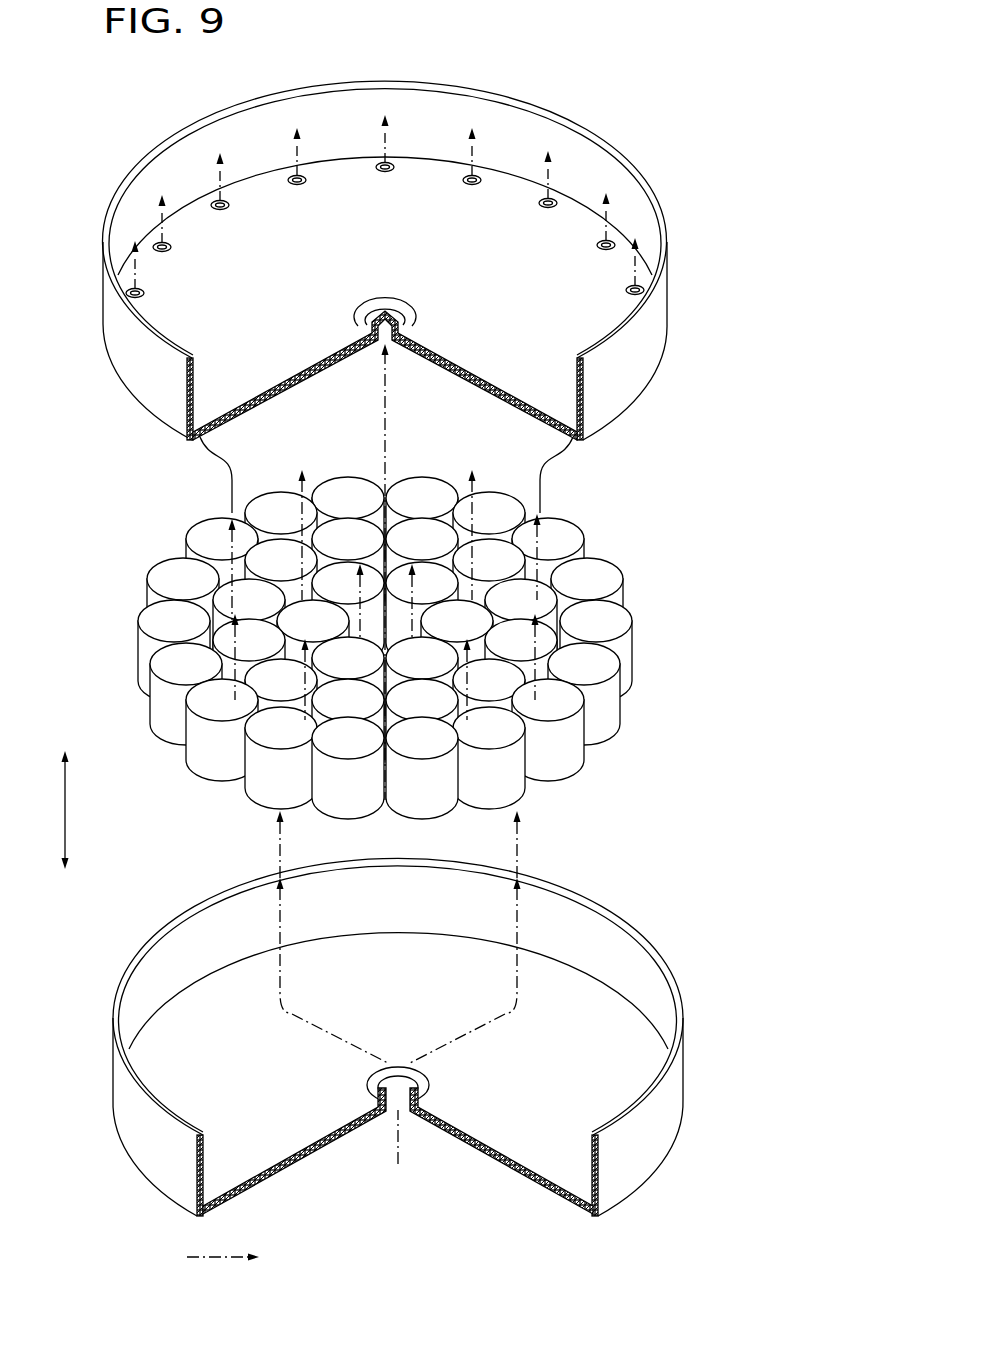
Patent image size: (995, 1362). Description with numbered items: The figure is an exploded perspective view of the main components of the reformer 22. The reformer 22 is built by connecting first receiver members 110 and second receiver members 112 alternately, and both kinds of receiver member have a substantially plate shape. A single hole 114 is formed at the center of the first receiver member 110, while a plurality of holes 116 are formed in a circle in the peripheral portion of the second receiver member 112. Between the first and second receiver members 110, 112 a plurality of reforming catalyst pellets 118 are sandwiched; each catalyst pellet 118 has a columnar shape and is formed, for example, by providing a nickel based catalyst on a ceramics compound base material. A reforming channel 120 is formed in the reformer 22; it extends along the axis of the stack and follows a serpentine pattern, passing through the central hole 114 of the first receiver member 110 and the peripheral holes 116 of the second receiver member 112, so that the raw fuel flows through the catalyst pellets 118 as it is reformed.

The reformer 22 is at (748, 317).
The first receiver member 110 is at (432, 1037).
The second receiver member 112 is at (623, 375).
The hole 114 is at (401, 1067).
The holes 116 is at (383, 164).
The reforming catalyst pellets 118 is at (597, 576).
The reforming channel 120 is at (228, 490).